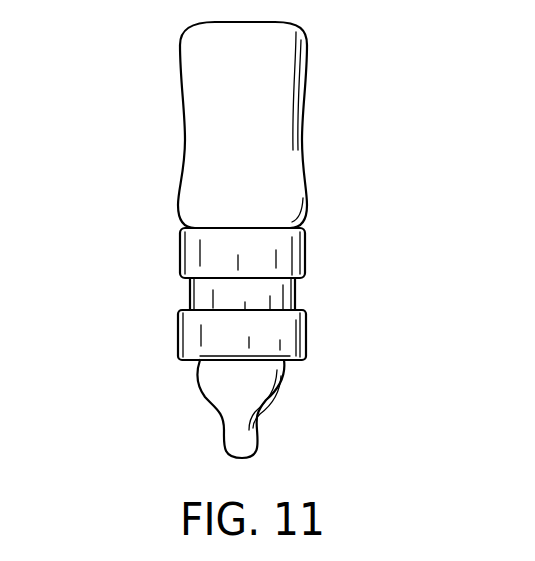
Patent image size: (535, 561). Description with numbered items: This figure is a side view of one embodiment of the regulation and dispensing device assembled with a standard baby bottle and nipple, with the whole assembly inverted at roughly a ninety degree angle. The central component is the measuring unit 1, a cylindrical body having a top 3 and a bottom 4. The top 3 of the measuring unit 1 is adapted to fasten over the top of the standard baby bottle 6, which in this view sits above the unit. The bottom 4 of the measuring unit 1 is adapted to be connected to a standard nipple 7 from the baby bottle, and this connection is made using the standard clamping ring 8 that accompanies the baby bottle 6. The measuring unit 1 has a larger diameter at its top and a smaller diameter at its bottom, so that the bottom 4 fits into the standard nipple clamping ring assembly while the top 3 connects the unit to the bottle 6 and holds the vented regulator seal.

The measuring unit 1 is at (322, 260).
The top of the measuring unit 3 is at (165, 230).
The bottom of the measuring unit 4 is at (165, 305).
The baby bottle 6 is at (318, 120).
The nipple 7 is at (286, 428).
The clamping ring 8 is at (328, 352).